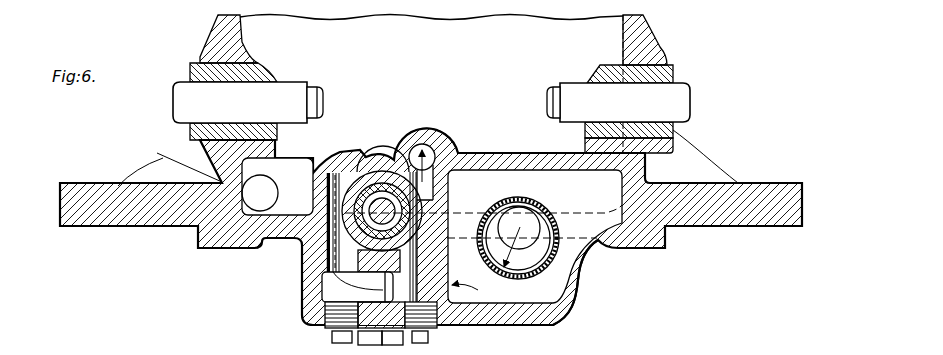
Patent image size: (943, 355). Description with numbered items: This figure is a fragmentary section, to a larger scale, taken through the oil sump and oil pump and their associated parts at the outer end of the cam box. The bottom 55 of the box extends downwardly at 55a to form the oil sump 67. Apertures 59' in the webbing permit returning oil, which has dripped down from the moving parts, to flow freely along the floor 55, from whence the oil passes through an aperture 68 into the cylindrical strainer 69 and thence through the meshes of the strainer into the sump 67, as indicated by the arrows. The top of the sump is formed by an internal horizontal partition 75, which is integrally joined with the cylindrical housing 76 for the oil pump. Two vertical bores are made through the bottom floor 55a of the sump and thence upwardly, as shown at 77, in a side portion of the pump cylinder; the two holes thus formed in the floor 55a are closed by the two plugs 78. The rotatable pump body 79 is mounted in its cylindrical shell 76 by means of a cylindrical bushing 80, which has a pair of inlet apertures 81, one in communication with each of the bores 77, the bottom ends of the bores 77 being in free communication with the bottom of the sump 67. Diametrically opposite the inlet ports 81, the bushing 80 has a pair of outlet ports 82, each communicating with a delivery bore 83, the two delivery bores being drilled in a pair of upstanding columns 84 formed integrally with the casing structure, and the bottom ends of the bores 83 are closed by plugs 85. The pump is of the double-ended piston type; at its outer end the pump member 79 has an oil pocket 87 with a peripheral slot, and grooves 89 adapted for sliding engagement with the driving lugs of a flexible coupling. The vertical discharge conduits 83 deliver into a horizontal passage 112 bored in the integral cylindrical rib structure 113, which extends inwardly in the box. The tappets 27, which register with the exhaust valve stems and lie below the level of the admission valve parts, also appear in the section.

The tappets 27 is at (183, 103).
The bottom 55 is at (268, 244).
The bottom floor 55a is at (527, 326).
The apertures 59' is at (428, 158).
The oil sump 67 is at (518, 248).
The aperture 68 is at (541, 211).
The cylindrical strainer 69 is at (558, 261).
The internal horizontal partition 75 is at (457, 153).
The cylindrical housing 76 is at (377, 172).
The vertical bores 77 is at (320, 175).
The plugs 78 is at (323, 332).
The rotatable pump body 79 is at (411, 207).
The cylindrical bushing 80 is at (384, 175).
The inlet apertures 81 is at (313, 197).
The outlet apertures 82 is at (440, 229).
The delivery bores 83 is at (425, 268).
The upstanding columns 84 is at (473, 292).
The plugs 85 is at (436, 330).
The oil pocket 87 is at (372, 172).
The grooves 89 is at (305, 240).
The horizontal passage 112 is at (434, 148).
The cylindrical rib structure 113 is at (414, 134).